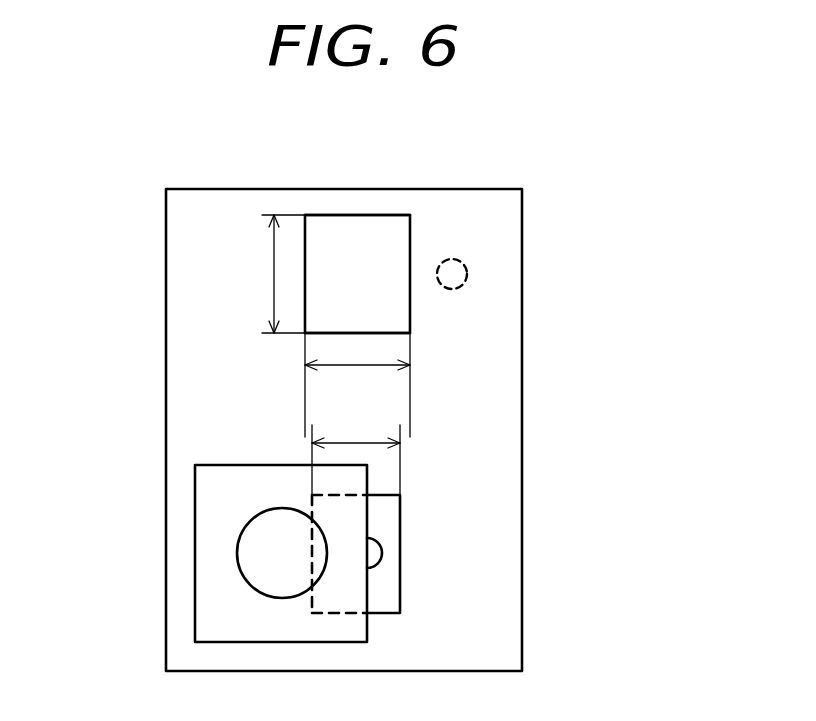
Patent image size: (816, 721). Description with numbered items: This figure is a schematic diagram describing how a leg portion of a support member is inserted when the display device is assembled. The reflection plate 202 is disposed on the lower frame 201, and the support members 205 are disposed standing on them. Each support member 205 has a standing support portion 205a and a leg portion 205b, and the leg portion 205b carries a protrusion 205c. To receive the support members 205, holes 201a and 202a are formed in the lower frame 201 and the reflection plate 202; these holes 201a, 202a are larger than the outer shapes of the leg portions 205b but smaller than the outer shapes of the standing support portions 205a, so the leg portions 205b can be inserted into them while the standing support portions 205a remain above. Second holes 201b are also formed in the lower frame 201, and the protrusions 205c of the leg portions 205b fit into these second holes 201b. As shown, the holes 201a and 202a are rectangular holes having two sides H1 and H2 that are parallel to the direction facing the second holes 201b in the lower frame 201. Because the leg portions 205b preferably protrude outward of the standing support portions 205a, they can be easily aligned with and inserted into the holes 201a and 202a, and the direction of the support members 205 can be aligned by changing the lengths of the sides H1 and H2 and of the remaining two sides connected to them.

The reflection plate 202 is at (446, 430).
The frame member (lower frame) 201 is at (468, 423).
The holes through which the leg portions pass 202a is at (429, 225).
The holes through which the leg portions pass 201a is at (365, 252).
The holes into which the protrusions fit (second holes) 201b is at (457, 277).
The side of the rectangular hole H1 is at (363, 332).
The side of the rectangular hole H2 is at (325, 213).
The support member 205 is at (330, 540).
The standing support portion 205a is at (220, 608).
The leg portion 205b is at (383, 597).
The protrusion 205c is at (375, 553).